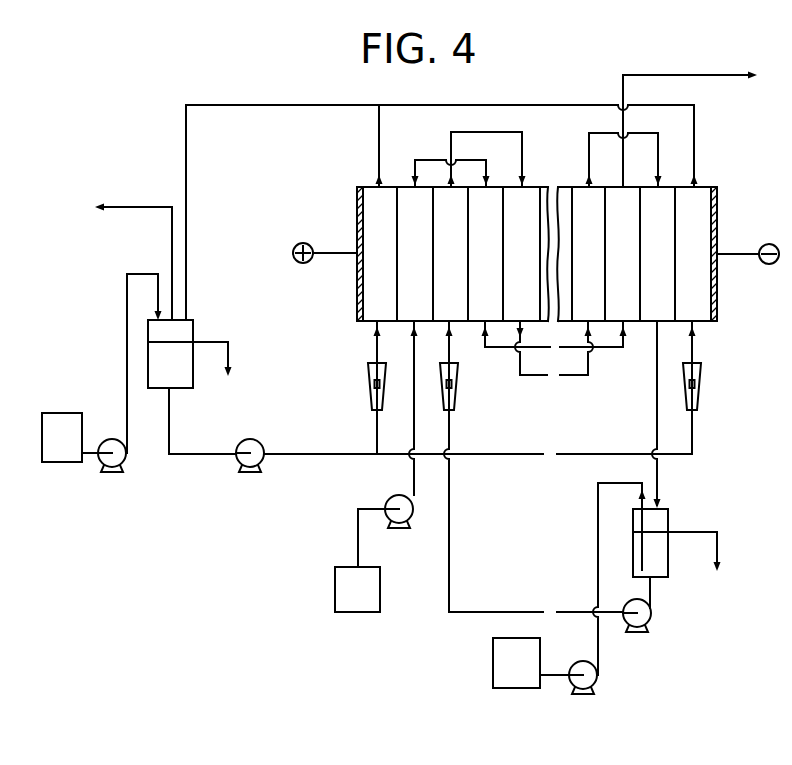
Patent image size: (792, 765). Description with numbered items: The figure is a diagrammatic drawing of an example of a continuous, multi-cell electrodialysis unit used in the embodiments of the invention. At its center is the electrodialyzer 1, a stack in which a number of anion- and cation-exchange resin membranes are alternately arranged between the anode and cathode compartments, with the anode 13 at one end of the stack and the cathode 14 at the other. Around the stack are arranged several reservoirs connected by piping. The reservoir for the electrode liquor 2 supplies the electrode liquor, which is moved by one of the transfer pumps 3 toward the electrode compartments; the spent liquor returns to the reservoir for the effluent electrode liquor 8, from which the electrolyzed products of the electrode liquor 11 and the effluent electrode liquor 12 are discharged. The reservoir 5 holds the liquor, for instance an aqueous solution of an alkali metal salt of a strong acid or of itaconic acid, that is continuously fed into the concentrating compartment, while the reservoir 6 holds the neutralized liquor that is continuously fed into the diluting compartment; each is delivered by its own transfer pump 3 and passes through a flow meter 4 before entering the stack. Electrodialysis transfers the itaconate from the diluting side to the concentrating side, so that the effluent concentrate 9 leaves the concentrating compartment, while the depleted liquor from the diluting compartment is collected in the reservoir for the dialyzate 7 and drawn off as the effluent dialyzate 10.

The electrodialyzer 1 is at (560, 178).
The reservoir for the electrode liquor 2 is at (62, 437).
The transfer pump 3 is at (383, 566).
The flow meter 4 is at (532, 386).
The reservoir for the liquor to be continuously fed into the concentrating compartme 5 is at (357, 589).
The reservoir for the liquor to be continuously fed into the diluting compartment 6 is at (516, 663).
The reservoir for the dialyzate 7 is at (660, 543).
The reservoir for the effluent electrode liquor 8 is at (170, 354).
The effluent concentrate 9 is at (725, 64).
The effluent dialyzate 10 is at (734, 555).
The electrolyzed products of the electrode liquor 11 is at (124, 193).
The effluent electrode liquor 12 is at (244, 359).
The anode 13 is at (304, 239).
The cathode 14 is at (769, 241).